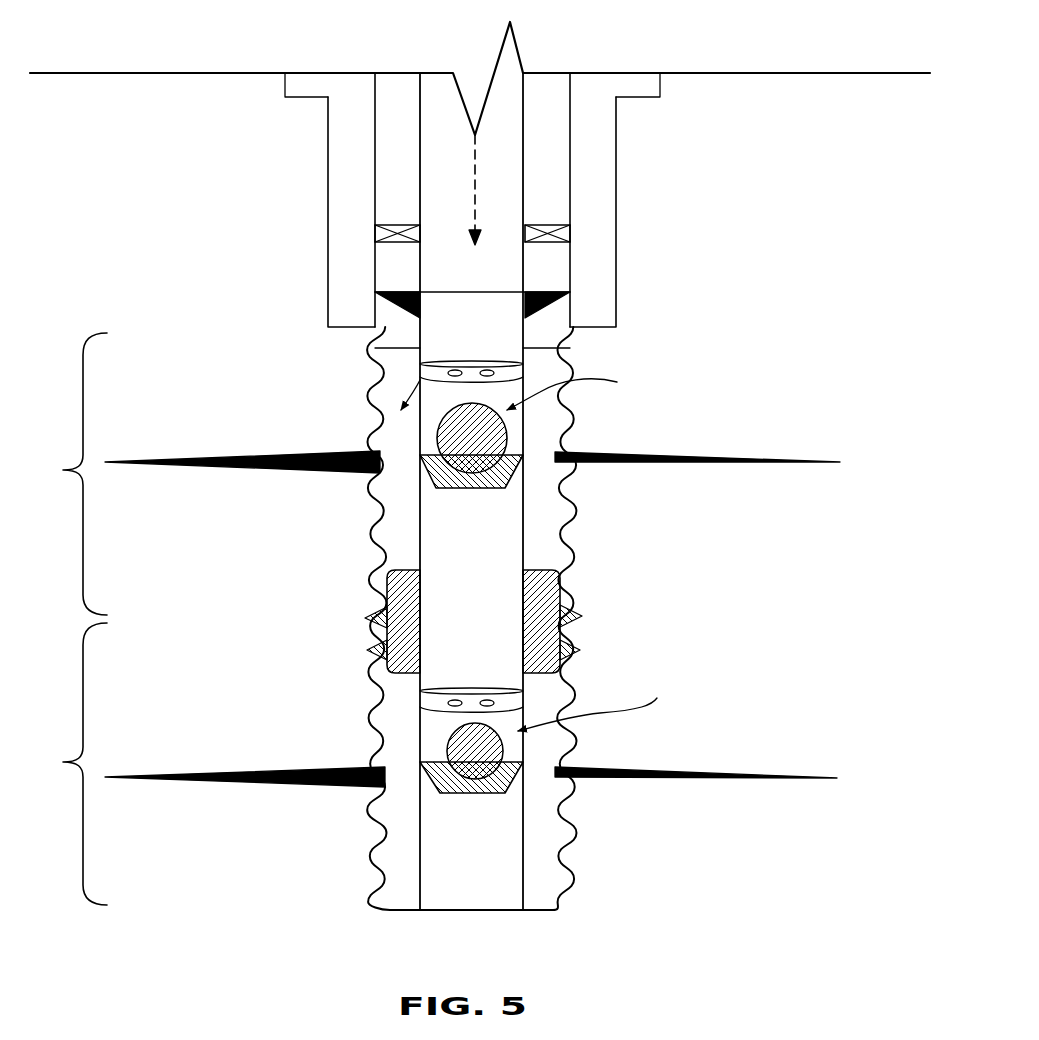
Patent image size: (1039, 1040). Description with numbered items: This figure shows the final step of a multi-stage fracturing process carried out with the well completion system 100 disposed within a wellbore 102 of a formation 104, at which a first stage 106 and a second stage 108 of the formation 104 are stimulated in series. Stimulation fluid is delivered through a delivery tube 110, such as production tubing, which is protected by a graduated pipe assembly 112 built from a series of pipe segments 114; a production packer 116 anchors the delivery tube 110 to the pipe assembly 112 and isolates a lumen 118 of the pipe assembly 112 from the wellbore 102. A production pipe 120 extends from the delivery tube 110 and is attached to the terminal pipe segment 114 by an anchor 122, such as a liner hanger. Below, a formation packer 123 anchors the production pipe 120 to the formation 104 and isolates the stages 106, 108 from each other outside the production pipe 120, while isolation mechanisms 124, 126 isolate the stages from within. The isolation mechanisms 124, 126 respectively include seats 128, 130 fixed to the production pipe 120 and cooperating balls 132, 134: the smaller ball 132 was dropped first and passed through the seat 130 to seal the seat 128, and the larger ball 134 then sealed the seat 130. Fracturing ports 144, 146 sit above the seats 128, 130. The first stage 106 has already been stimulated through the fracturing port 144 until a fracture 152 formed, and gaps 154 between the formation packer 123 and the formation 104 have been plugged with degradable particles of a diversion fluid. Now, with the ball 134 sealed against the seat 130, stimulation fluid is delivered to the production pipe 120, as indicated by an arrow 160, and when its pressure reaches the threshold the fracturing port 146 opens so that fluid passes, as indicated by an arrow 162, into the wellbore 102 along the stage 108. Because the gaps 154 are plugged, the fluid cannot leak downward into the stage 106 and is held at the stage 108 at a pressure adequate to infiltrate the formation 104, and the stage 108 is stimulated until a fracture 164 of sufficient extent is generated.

The well completion system 100 is at (752, 179).
The wellbore 102 is at (565, 343).
The formation 104 is at (231, 307).
The first stage 106 is at (59, 764).
The second stage 108 is at (59, 474).
The delivery tube 110 is at (420, 117).
The graduated pipe assembly 112 is at (328, 170).
The pipe segments 114 is at (346, 200).
The production packer 116 is at (393, 225).
The lumen 118 is at (548, 193).
The production pipe 120 is at (523, 348).
The anchor 122 is at (552, 292).
The formation packer 123 is at (580, 615).
The isolation mechanism 124 is at (611, 707).
The isolation mechanism 126 is at (586, 388).
The seat 128 is at (497, 793).
The seat 130 is at (493, 488).
The ball 132 is at (503, 748).
The ball 134 is at (510, 437).
The fracturing port 144 is at (420, 695).
The fracturing port 146 is at (420, 372).
The fracture 152 is at (262, 787).
The gaps 154 is at (372, 616).
The arrow 160 is at (475, 160).
The arrow 162 is at (375, 392).
The fracture 164 is at (267, 472).